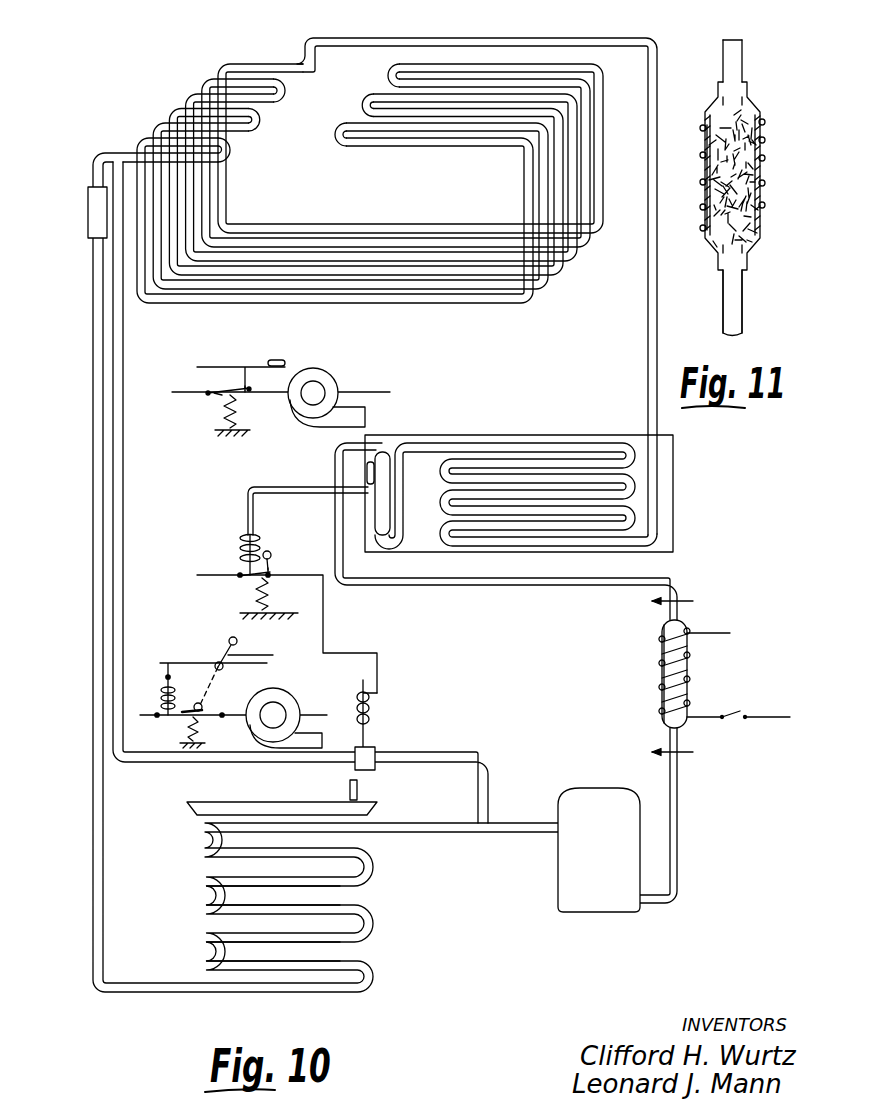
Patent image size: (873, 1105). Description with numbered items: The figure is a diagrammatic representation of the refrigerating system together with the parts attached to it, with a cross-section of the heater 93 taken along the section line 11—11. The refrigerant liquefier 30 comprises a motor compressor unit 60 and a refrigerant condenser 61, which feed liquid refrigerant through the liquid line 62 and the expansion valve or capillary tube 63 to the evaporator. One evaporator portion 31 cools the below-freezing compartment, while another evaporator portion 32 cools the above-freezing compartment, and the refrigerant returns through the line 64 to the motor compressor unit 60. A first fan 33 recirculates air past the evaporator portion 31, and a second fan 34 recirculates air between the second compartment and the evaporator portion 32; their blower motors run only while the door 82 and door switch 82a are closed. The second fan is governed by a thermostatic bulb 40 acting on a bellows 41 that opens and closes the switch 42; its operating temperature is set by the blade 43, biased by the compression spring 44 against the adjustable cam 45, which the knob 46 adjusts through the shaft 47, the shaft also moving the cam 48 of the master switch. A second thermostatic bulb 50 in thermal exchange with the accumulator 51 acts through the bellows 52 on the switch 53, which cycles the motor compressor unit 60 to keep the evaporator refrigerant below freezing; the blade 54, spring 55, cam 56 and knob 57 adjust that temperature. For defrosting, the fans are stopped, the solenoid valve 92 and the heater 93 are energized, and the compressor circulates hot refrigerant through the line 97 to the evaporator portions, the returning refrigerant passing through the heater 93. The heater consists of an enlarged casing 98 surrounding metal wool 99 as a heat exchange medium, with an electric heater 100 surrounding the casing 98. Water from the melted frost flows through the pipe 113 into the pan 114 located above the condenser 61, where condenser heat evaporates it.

In FIG. 10, the section line 11— 11 is at (690, 681).
In FIG. 10, the refrigerant liquefier 30 is at (503, 915).
In FIG. 10, the evaporator portion 31 is at (308, 222).
In FIG. 10, the evaporator portion 32 is at (528, 437).
In FIG. 10, the first fan 33 is at (333, 373).
In FIG. 10, the second fan 34 is at (295, 708).
In FIG. 10, the thermostatic bulb 40 is at (168, 677).
In FIG. 10, the bellows 41 is at (176, 698).
In FIG. 10, the switch 42 is at (165, 716).
In FIG. 10, the blade 43 is at (212, 714).
In FIG. 10, the compression spring 44 is at (190, 738).
In FIG. 10, the adjustable cam 45 is at (214, 690).
In FIG. 10, the knob 46 is at (238, 641).
In FIG. 10, the shaft 47 is at (245, 655).
In FIG. 10, the cam 48 is at (225, 668).
In FIG. 10, the thermostatic bulb 50 is at (367, 470).
In FIG. 10, the accumulator 51 is at (383, 458).
In FIG. 10, the bellows 52 is at (240, 538).
In FIG. 10, the switch 53 is at (240, 578).
In FIG. 10, the blade 54 is at (272, 580).
In FIG. 10, the spring 55 is at (268, 602).
In FIG. 10, the cam 56 is at (273, 570).
In FIG. 10, the knob 57 is at (272, 553).
In FIG. 10, the motor compressor unit 60 is at (589, 804).
In FIG. 10, the refrigerant condenser 61 is at (372, 935).
In FIG. 10, the liquid line 62 is at (92, 906).
In FIG. 10, the expansion valve or capillary tube 63 is at (88, 228).
In FIG. 10, the return line 64 is at (550, 587).
In FIG. 10, the door 82 is at (228, 366).
In FIG. 10, the door switch 82a is at (218, 396).
In FIG. 10, the solenoid valve 92 is at (377, 754).
In FIG. 10, the heater 93 is at (688, 656).
In FIG. 11, the heater 93 is at (750, 97).
In FIG. 10, the line 97 is at (125, 492).
In FIG. 10, the enlarged casing 98 is at (662, 645).
In FIG. 11, the enlarged casing 98 is at (763, 148).
In FIG. 11, the metal wool 99 is at (752, 226).
In FIG. 10, the electric heater 100 is at (662, 683).
In FIG. 11, the electric heater 100 is at (705, 222).
In FIG. 10, the pipe 113 is at (360, 790).
In FIG. 10, the pan 114 is at (190, 806).